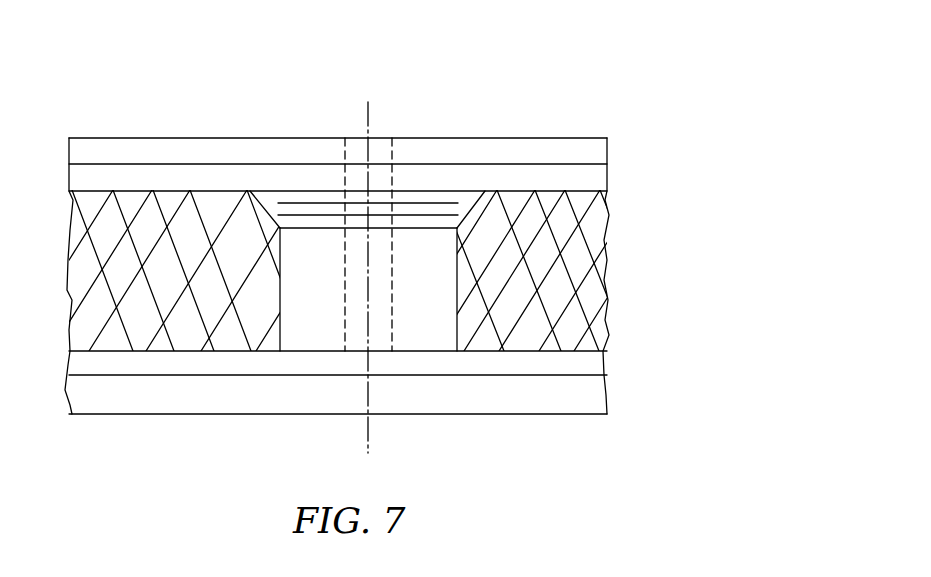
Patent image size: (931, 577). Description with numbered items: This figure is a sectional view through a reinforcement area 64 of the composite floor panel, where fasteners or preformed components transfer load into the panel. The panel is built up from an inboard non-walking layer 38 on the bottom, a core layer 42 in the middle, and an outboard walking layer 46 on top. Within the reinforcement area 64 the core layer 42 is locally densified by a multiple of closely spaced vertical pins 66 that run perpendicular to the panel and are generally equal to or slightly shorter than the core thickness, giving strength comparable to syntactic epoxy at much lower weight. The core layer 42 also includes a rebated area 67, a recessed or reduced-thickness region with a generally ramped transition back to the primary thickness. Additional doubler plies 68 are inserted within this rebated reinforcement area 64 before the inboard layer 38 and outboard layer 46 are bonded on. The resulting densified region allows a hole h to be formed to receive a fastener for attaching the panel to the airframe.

The reinforcement area 64 is at (539, 76).
The outboard layer 46 is at (588, 153).
The core layer 42 is at (593, 285).
The inboard layer 38 is at (583, 397).
The vertical pins 66 is at (433, 332).
The rebated area 67 is at (268, 188).
The doubler plies 68 is at (438, 200).
The hole h is at (343, 334).